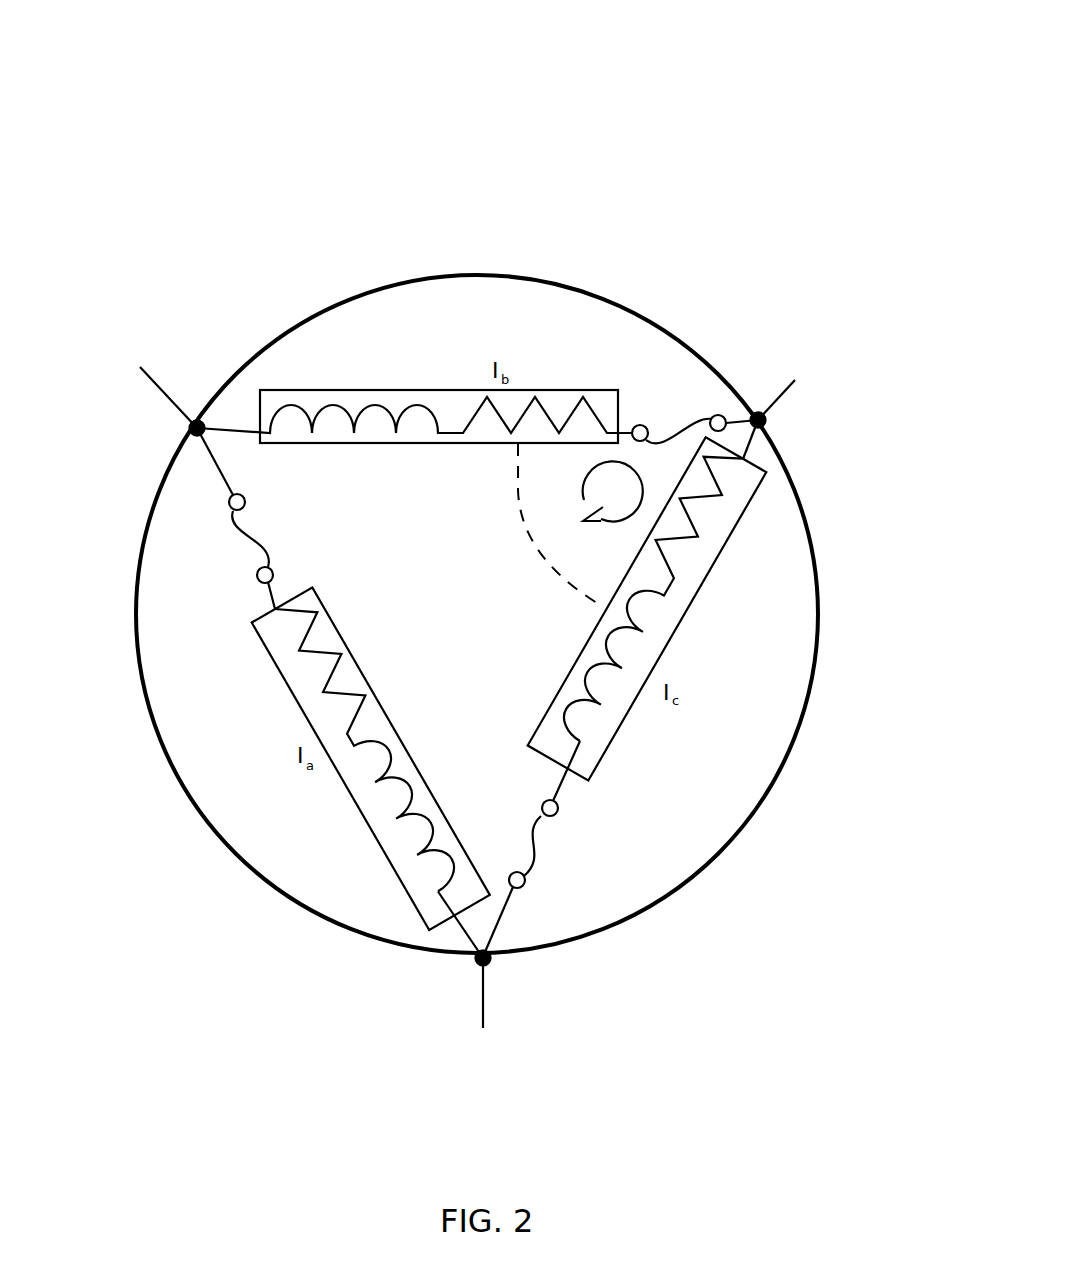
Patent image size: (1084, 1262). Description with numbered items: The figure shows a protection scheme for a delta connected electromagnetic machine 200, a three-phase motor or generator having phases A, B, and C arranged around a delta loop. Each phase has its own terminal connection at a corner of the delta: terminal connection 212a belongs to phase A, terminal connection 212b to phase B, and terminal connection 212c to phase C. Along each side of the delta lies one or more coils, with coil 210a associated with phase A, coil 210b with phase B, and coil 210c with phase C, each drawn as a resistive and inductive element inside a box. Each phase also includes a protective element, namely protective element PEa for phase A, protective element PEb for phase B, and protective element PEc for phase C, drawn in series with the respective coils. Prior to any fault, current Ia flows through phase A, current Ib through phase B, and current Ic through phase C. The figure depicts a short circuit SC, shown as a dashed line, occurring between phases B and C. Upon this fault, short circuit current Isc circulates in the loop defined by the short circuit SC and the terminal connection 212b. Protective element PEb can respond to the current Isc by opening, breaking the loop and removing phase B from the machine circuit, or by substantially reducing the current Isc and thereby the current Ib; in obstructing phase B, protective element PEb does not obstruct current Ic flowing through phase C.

The delta connected electromagnetic machine 200 is at (542, 60).
The coil 210a is at (363, 815).
The coil 210b is at (387, 388).
The coil 210c is at (725, 545).
The terminal connection 212a is at (135, 389).
The terminal connection 212b is at (809, 394).
The terminal connection 212c is at (502, 1012).
The protective element PEa is at (232, 528).
The protective element PEb is at (706, 418).
The protective element PEc is at (530, 830).
The short circuit SC is at (538, 523).
The short circuit current Isc is at (613, 491).
The phase A is at (232, 665).
The phase B is at (557, 338).
The phase C is at (733, 650).